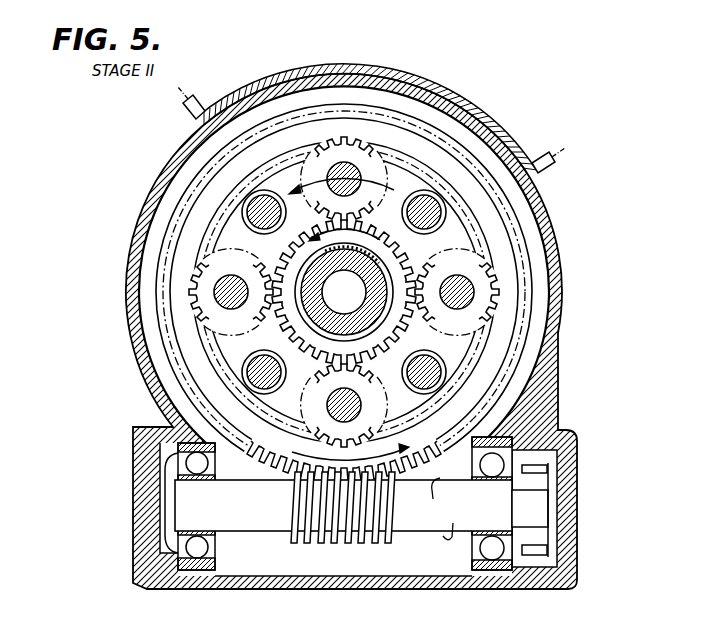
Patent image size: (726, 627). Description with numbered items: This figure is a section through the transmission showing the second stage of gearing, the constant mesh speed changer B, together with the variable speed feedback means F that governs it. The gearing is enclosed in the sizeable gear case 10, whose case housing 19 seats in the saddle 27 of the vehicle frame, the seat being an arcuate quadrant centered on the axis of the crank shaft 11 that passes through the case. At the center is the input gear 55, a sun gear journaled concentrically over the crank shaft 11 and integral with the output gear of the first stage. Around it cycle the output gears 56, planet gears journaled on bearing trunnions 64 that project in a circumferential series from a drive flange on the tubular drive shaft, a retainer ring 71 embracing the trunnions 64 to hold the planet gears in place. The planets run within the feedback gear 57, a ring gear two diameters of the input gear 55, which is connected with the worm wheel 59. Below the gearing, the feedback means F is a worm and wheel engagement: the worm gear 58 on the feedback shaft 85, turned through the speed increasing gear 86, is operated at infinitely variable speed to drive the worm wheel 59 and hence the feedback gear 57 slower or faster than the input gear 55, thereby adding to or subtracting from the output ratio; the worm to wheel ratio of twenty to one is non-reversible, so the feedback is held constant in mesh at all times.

The gear case 10 is at (160, 165).
The crank shaft 11 is at (321, 300).
The case housing 19 is at (555, 283).
The saddle 27 is at (187, 111).
The input gear 55 is at (279, 243).
The output gear 56 is at (190, 292).
The feedback gear 57 is at (208, 323).
The worm gear 58 is at (338, 546).
The worm wheel 59 is at (160, 240).
The bearing trunnions 64 is at (466, 298).
The retainer ring 71 is at (478, 238).
The feedback shaft 85 is at (414, 524).
The speed increasing gear 86 is at (540, 469).
The constant mesh speed changer B is at (380, 143).
The variable speed feedback means F is at (270, 522).